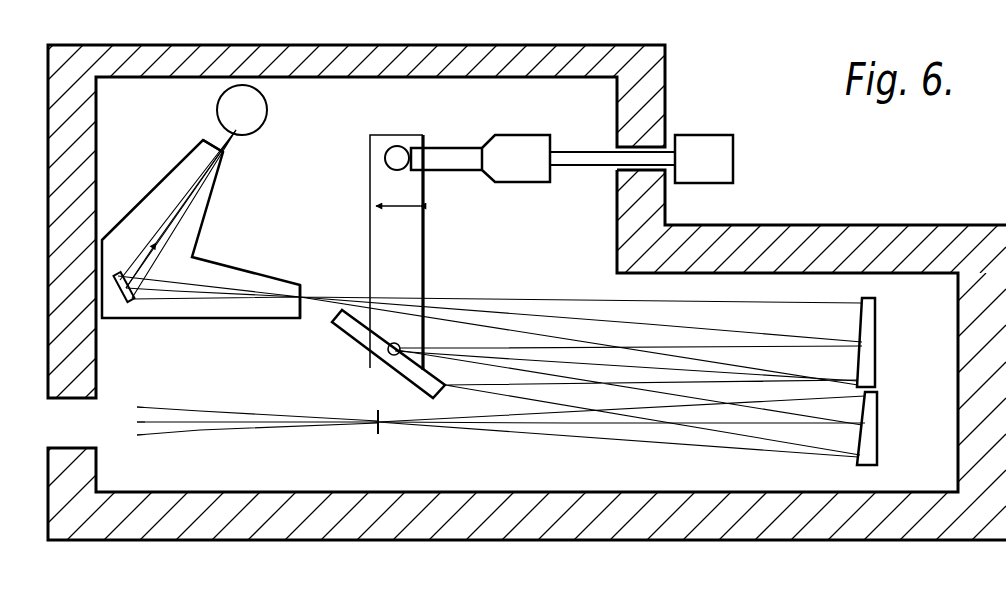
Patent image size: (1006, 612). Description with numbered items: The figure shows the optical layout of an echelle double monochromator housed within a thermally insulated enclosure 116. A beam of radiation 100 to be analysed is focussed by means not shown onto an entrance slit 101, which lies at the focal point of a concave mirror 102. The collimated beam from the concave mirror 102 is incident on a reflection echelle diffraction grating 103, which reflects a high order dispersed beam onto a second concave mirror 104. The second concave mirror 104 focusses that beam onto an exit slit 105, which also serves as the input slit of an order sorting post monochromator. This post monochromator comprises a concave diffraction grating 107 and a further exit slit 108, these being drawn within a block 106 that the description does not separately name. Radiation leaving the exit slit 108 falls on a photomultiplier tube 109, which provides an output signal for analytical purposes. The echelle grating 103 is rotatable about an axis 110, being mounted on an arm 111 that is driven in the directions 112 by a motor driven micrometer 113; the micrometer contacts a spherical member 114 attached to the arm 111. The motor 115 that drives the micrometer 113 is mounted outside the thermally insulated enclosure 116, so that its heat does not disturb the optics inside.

The beam of radiation 100 is at (235, 424).
The entrance slit 101 is at (370, 428).
The concave mirror 102 is at (870, 430).
The reflection echelle diffraction grating 103 is at (366, 340).
The second concave mirror 104 is at (868, 330).
The exit slit 105 is at (301, 286).
The slotted block 106 is at (215, 319).
The concave diffraction grating 107 is at (131, 304).
The exit slit 108 is at (222, 150).
The photomultiplier tube 109 is at (261, 112).
The axis 110 is at (394, 356).
The arm 111 is at (412, 252).
The directions 112 is at (390, 203).
The motor driven micrometer 113 is at (514, 143).
The spherical member 114 is at (398, 146).
The motor 115 is at (702, 141).
The thermally insulated enclosure 116 is at (836, 243).